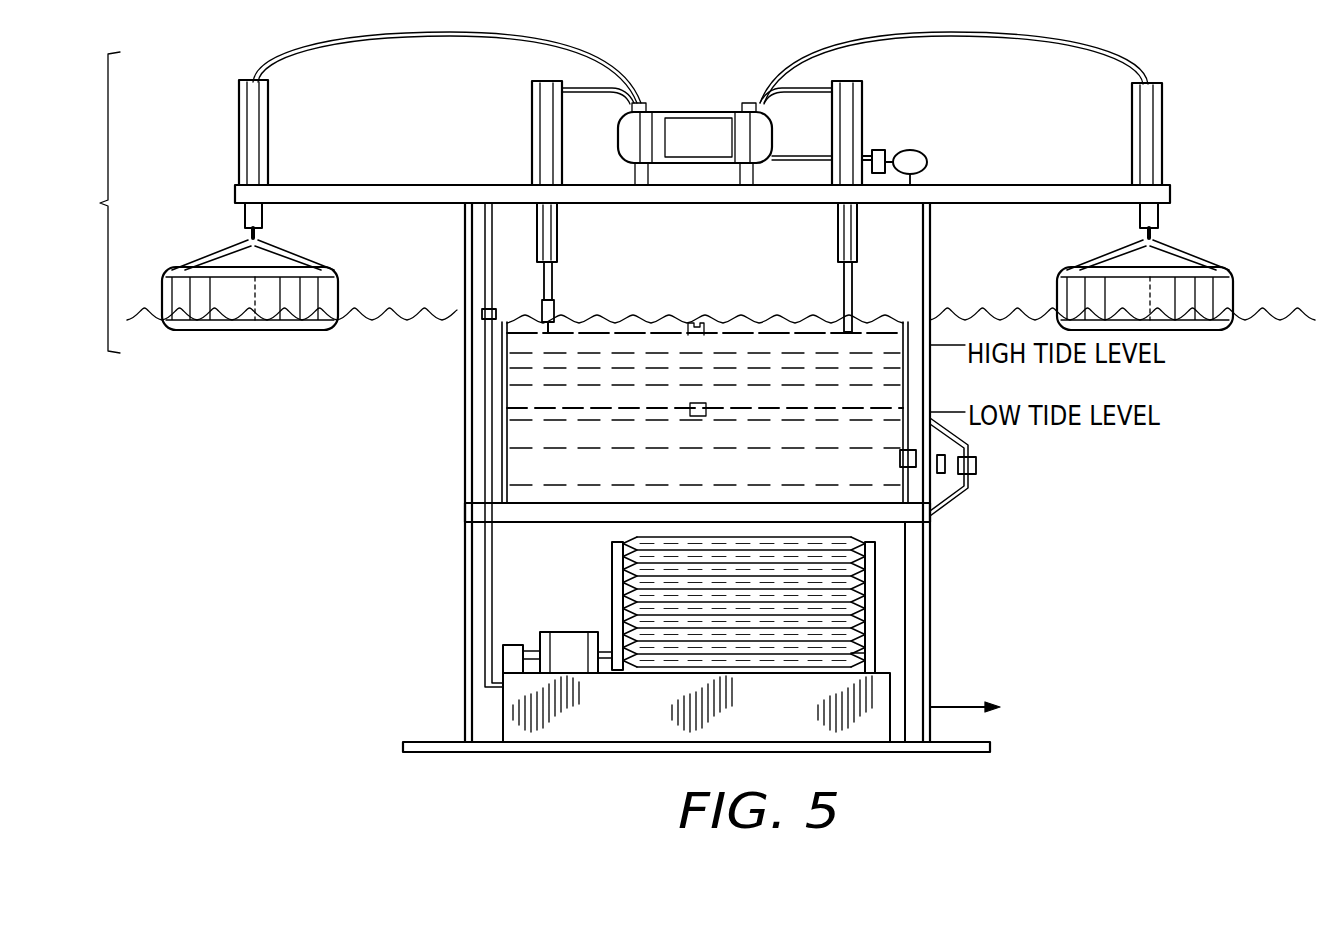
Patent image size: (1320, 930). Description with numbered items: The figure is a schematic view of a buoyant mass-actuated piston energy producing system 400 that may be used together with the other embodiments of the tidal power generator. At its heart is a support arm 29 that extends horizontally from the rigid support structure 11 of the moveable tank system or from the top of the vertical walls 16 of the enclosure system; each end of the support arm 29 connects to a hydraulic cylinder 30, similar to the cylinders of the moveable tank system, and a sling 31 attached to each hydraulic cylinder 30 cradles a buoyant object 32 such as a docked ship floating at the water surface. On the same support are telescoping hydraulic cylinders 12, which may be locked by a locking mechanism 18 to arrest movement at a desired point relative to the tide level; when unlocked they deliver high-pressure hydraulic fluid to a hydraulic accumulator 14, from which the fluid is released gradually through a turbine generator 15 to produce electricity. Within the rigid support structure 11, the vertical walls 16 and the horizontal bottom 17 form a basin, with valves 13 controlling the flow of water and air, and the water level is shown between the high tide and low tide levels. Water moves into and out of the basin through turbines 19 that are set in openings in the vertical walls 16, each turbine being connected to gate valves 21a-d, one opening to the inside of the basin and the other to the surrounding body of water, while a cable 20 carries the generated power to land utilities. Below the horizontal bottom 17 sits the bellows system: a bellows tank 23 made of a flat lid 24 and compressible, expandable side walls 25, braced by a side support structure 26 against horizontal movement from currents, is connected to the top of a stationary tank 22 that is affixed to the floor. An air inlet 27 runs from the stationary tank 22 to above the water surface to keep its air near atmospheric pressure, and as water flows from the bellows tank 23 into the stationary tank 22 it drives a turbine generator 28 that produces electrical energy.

The buoyant mass-actuated piston energy producing system 400 is at (83, 202).
The support arm 29 is at (410, 185).
The hydraulic cylinder 30 is at (268, 148).
The telescoping hydraulic cylinder 12 is at (862, 115).
The hydraulic accumulator 14 is at (712, 70).
The turbine generator 15 is at (918, 152).
The rigid support structure 11 is at (930, 238).
The sling 31 is at (210, 258).
The buoyant object 32 is at (338, 296).
The air inlet 27 is at (490, 309).
The locking mechanism 18 is at (564, 273).
The vertical walls 16 is at (908, 378).
The valves 13 is at (696, 338).
The horizontal bottom 17 is at (637, 502).
The flat lid 24 is at (777, 540).
The side support structure 26 is at (875, 603).
The side walls 25 is at (858, 633).
The gate valves 21a-d is at (976, 465).
The turbines 19 is at (940, 475).
The cable 20 is at (975, 700).
The turbine generator 28 is at (585, 675).
The bellows tank 23 is at (765, 662).
The stationary tank 22 is at (648, 752).